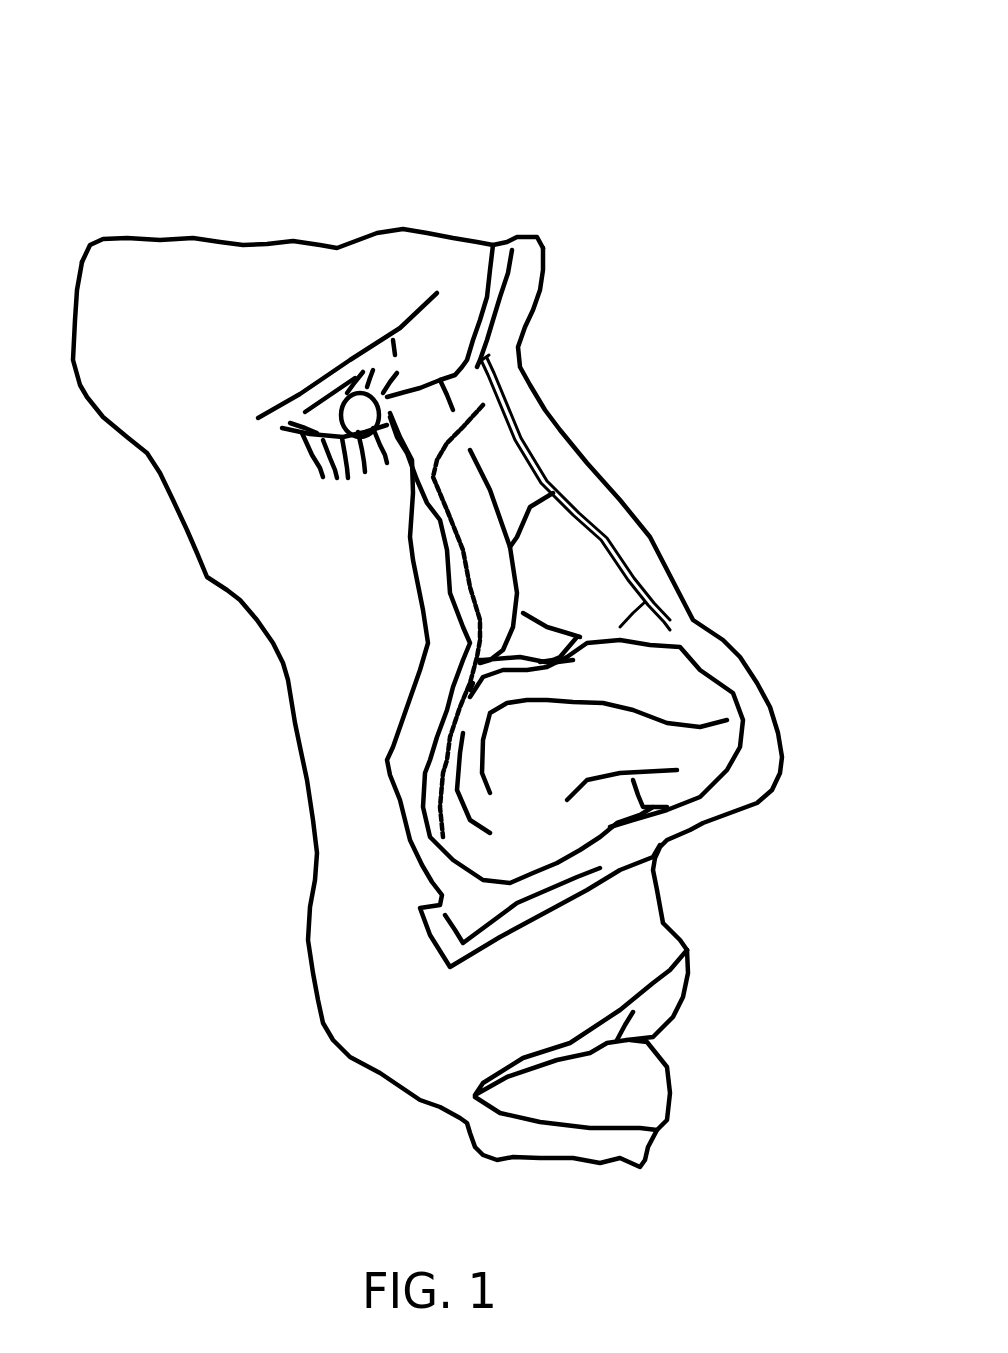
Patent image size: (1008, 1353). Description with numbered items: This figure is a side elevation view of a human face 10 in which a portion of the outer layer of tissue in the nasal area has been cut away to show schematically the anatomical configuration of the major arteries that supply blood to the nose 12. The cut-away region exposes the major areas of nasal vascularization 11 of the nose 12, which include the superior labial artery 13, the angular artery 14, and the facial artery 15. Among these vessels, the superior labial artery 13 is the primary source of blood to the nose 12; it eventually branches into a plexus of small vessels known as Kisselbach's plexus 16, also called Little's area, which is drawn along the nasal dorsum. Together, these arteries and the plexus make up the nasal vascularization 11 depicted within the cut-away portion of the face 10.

The human face 10 is at (380, 583).
The nasal vascularization 11 is at (413, 648).
The nose 12 is at (705, 599).
The superior labial artery 13 is at (613, 777).
The angular artery 14 is at (391, 644).
The facial artery 15 is at (421, 690).
The Kisselbach's plexus 16 is at (596, 492).